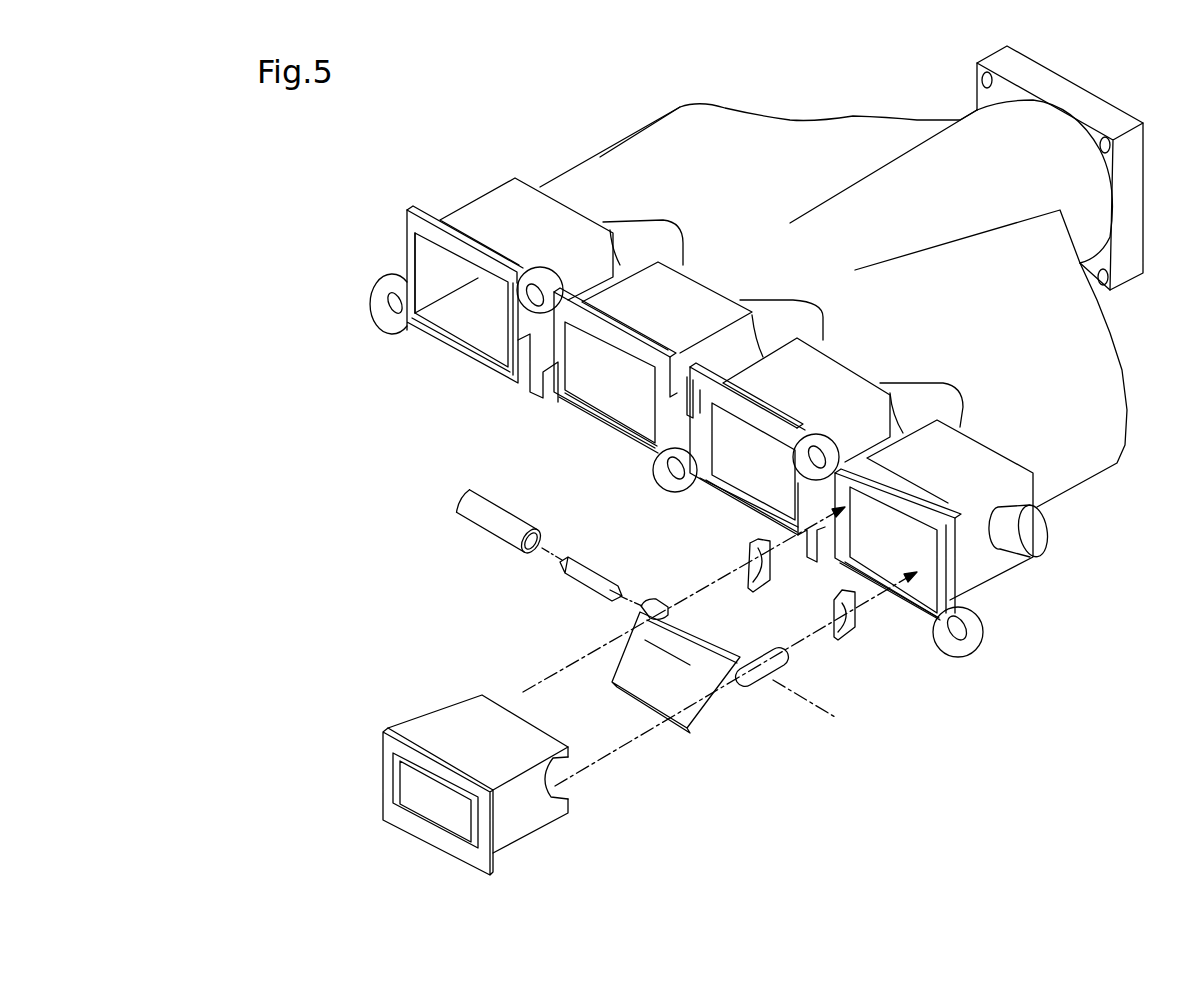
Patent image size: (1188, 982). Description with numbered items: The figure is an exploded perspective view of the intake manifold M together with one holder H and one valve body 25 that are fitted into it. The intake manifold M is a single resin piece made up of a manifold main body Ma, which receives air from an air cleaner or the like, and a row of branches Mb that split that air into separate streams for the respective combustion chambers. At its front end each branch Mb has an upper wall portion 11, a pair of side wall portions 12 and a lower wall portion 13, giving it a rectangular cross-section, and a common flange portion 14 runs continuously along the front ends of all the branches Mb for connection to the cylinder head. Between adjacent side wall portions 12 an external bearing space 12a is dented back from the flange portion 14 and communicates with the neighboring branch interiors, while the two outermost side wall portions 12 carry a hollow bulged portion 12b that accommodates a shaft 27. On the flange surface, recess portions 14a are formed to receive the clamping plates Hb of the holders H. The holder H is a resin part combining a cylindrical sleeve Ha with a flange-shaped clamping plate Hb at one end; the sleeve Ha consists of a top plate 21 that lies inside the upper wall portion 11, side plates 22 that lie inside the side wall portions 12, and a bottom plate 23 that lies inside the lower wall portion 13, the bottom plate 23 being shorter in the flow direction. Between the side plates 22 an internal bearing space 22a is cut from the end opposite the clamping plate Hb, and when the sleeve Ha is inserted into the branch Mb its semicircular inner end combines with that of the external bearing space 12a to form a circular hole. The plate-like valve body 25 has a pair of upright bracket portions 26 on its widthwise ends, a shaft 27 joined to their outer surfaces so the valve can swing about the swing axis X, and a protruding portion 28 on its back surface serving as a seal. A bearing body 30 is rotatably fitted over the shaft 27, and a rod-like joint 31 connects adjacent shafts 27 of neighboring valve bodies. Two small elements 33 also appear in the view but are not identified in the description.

The intake manifold M is at (513, 150).
The manifold main body Ma is at (640, 142).
The branch Mb is at (568, 195).
The upper wall portion 11 is at (468, 222).
The side wall portion 12 is at (398, 305).
The external bearing space 12a is at (521, 330).
The hollow bulged portion 12b is at (1037, 540).
The lower wall portion 13 is at (485, 335).
The flange portion 14 is at (415, 235).
The recess portion 14a is at (438, 328).
The top plate 21 is at (453, 735).
The side plate 22 is at (407, 773).
The internal bearing space 22a is at (563, 788).
The bottom plate 23 is at (440, 805).
The valve body 25 is at (662, 667).
The bracket portion 26 is at (681, 633).
The shaft 27 is at (652, 606).
The protruding portion 28 is at (757, 690).
The bearing body 30 is at (565, 573).
The joint 31 is at (467, 491).
The clip 33 is at (745, 556).
The holder H is at (375, 773).
The sleeve Ha is at (436, 735).
The clamping plate Hb is at (425, 830).
The swing axis X is at (810, 704).